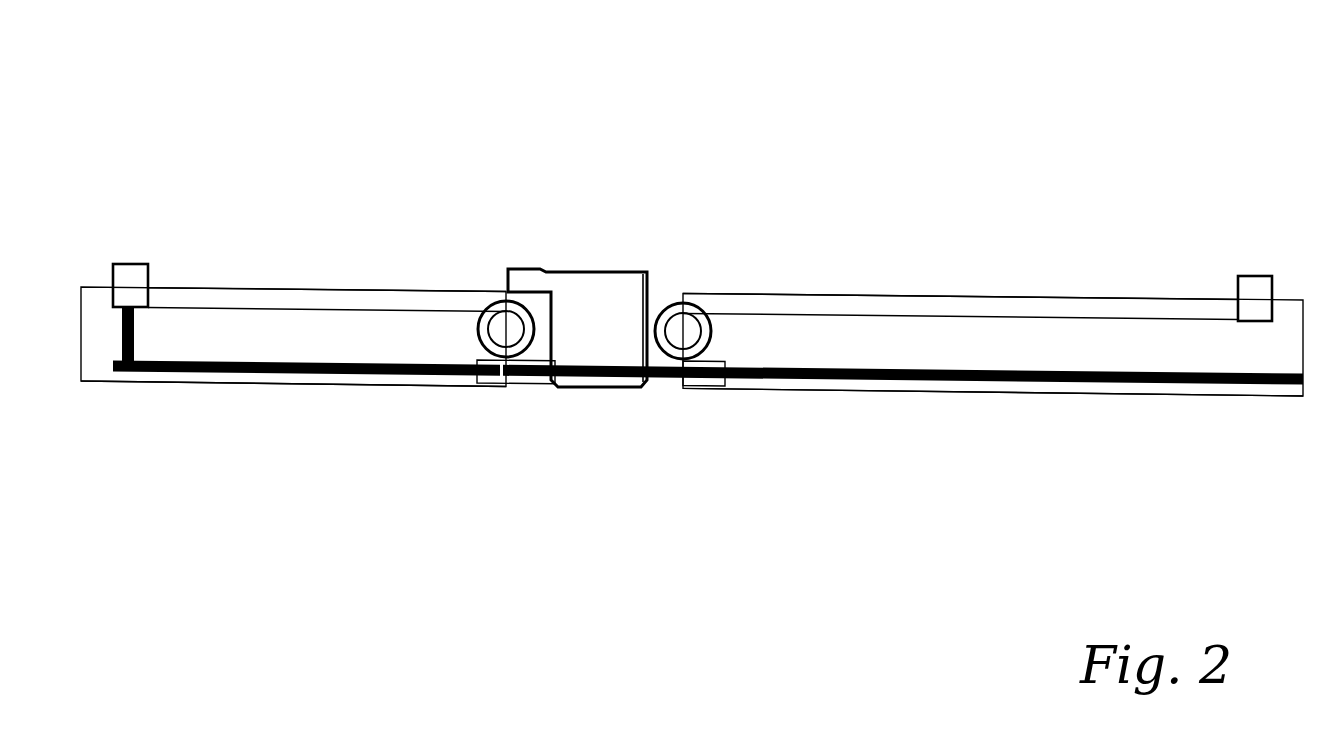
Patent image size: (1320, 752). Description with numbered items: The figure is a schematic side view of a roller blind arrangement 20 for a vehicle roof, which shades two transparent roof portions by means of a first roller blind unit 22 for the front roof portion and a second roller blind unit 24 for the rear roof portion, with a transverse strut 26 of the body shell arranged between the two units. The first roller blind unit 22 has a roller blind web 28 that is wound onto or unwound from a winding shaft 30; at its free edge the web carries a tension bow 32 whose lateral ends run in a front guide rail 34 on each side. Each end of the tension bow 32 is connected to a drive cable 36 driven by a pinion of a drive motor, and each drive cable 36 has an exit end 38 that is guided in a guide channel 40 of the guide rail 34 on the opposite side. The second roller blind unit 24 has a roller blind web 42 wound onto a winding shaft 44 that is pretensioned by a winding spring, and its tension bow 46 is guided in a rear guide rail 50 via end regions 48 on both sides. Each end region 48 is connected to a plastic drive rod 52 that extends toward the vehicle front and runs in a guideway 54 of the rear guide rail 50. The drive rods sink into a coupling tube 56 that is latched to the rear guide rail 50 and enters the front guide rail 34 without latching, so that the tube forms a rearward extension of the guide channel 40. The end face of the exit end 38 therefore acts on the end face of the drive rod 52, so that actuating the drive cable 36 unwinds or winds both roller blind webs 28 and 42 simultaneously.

The roller blind arrangement 20 is at (968, 130).
The first roller blind unit 22 is at (1097, 293).
The second roller blind unit 24 is at (348, 287).
The transverse strut 26 is at (598, 268).
The roller blind web 28 is at (855, 310).
The winding shaft 30 is at (668, 319).
The tension bow 32 is at (1253, 287).
The front guide rail 34 is at (1002, 305).
The drive cable 36 is at (1047, 384).
The exit end 38 is at (768, 381).
The guide channel 40 is at (857, 389).
The roller blind web 42 is at (215, 297).
The winding shaft 44 is at (497, 318).
The tension bow 46 is at (122, 272).
The end region 48 is at (122, 342).
The rear guide rail 50 is at (288, 292).
The drive rod 52 is at (312, 377).
The guideway 54 is at (193, 372).
The coupling tube 56 is at (540, 387).